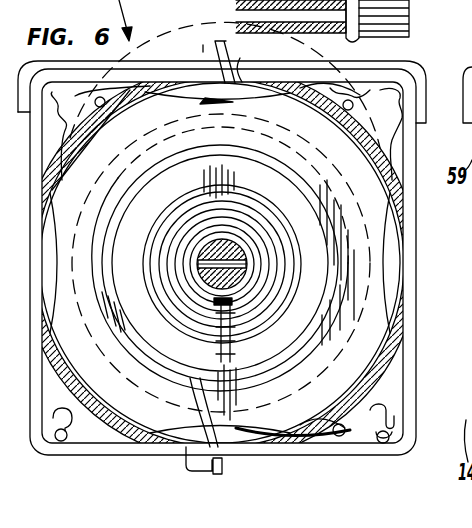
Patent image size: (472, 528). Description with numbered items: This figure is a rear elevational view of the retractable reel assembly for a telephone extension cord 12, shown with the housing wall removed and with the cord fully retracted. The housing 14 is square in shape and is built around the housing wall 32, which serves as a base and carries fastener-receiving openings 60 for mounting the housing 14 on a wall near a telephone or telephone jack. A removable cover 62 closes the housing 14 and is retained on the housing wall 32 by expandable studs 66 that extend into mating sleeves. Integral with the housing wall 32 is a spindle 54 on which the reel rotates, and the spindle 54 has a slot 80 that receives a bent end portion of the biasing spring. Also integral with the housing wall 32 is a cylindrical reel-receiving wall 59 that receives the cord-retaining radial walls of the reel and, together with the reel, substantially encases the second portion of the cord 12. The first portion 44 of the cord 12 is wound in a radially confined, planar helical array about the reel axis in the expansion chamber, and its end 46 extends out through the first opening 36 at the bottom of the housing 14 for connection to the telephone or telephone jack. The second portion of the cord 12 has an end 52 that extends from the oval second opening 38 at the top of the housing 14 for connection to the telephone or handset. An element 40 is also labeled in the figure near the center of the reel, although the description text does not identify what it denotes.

The telephone extension cord 12 is at (303, 209).
The housing 14 is at (62, 372).
The housing wall 32 is at (395, 378).
The first opening 36 is at (283, 420).
The second opening 38 is at (240, 58).
The lead terminal 40 is at (240, 298).
The first portion of the cord 44 is at (158, 252).
The end of the first portion 46 is at (188, 441).
The end of the second portion 52 is at (214, 41).
The spindle 54 is at (203, 242).
The cylindrical reel-receiving wall 59 is at (130, 92).
The fastener-receiving openings 60 is at (385, 428).
The removable cover 62 is at (415, 163).
The expandable studs 66 is at (400, 355).
The slot 80 is at (247, 263).